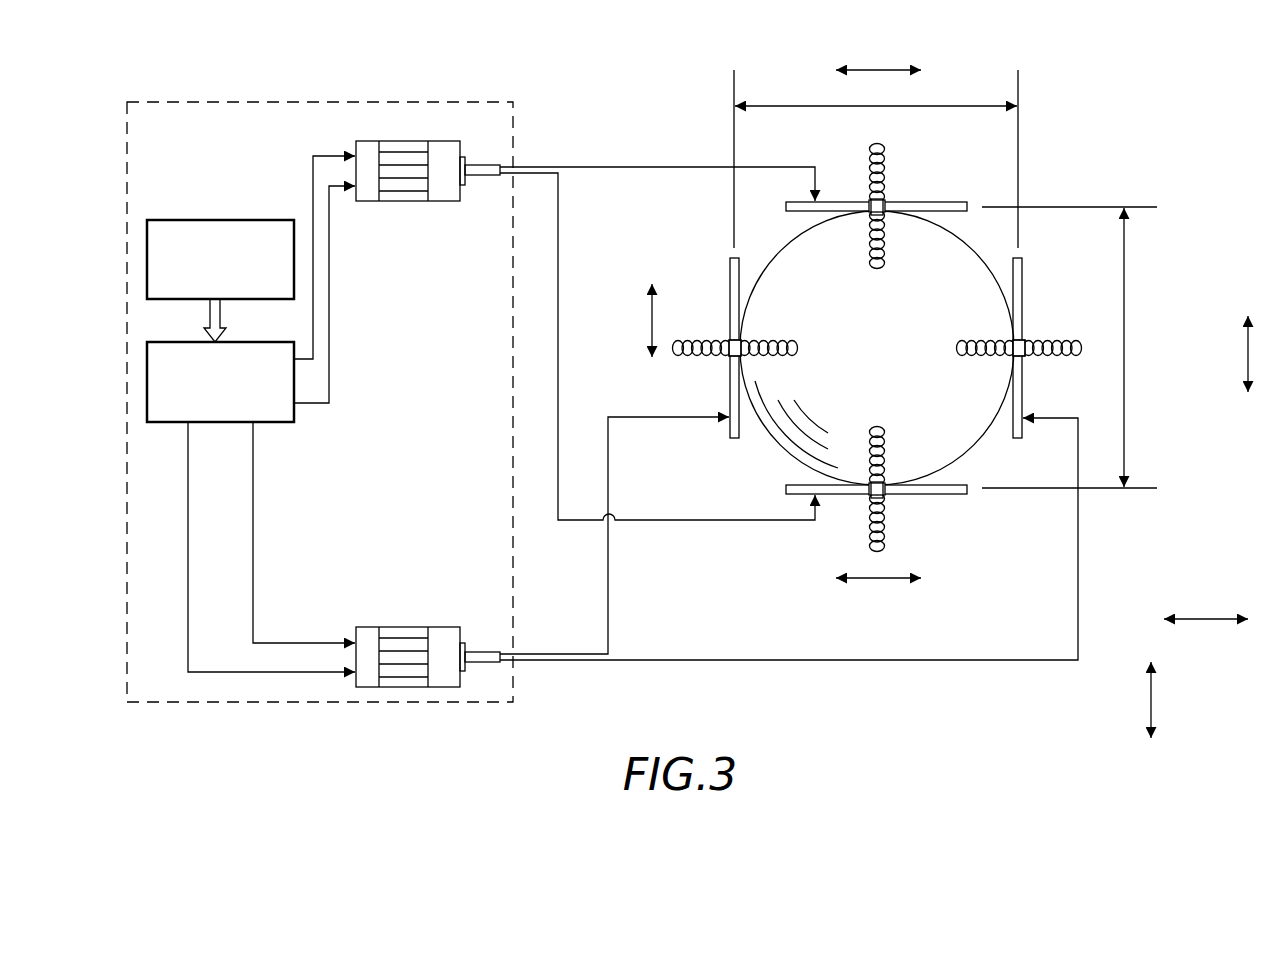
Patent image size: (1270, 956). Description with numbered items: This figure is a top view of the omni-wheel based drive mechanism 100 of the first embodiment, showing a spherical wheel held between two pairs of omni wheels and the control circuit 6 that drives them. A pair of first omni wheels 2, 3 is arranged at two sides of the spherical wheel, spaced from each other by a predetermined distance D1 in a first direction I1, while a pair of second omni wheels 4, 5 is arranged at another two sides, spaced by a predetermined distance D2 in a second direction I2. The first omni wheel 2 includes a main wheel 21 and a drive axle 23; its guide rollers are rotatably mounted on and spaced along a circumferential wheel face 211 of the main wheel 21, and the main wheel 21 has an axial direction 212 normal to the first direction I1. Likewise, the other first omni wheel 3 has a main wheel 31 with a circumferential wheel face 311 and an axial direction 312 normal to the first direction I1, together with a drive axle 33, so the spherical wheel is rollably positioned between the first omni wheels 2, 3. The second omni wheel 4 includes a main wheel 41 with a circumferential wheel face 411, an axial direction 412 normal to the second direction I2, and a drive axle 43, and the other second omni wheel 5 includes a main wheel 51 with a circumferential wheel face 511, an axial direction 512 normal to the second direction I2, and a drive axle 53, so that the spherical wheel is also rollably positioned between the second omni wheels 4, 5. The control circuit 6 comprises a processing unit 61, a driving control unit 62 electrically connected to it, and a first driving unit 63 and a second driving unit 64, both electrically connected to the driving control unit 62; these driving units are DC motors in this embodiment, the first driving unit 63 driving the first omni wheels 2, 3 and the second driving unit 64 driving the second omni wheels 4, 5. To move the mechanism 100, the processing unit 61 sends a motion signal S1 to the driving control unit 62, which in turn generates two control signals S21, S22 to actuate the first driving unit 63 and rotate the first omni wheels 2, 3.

The omni-wheel based drive mechanism 100 is at (1165, 108).
The first omni wheel 2 is at (1026, 348).
The main wheel 21 is at (1012, 336).
The circumferential wheel face 211 is at (972, 340).
The axial direction 212 is at (1246, 350).
The drive axle 23 is at (1022, 292).
The first omni wheel 3 is at (754, 348).
The main wheel 31 is at (761, 312).
The circumferential wheel face 311 is at (762, 338).
The axial direction 312 is at (650, 322).
The drive axle 33 is at (730, 295).
The second omni wheel 4 is at (876, 476).
The main wheel 41 is at (894, 468).
The circumferential wheel face 411 is at (886, 478).
The axial direction 412 is at (880, 582).
The drive axle 43 is at (850, 494).
The second omni wheel 5 is at (878, 205).
The main wheel 51 is at (901, 207).
The circumferential wheel face 511 is at (883, 215).
The axial direction 512 is at (873, 68).
The drive axle 53 is at (835, 202).
The control circuit 6 is at (232, 125).
The processing unit 61 is at (172, 218).
The driving control unit 62 is at (180, 425).
The first driving unit 63 is at (437, 640).
The second driving unit 64 is at (440, 190).
The motion signal S1 is at (210, 320).
The control signal S21 is at (188, 545).
The control signal S22 is at (253, 532).
The predetermined distance D1 is at (953, 103).
The predetermined distance D2 is at (1126, 305).
The first direction I1 is at (1200, 617).
The second direction I2 is at (1149, 700).